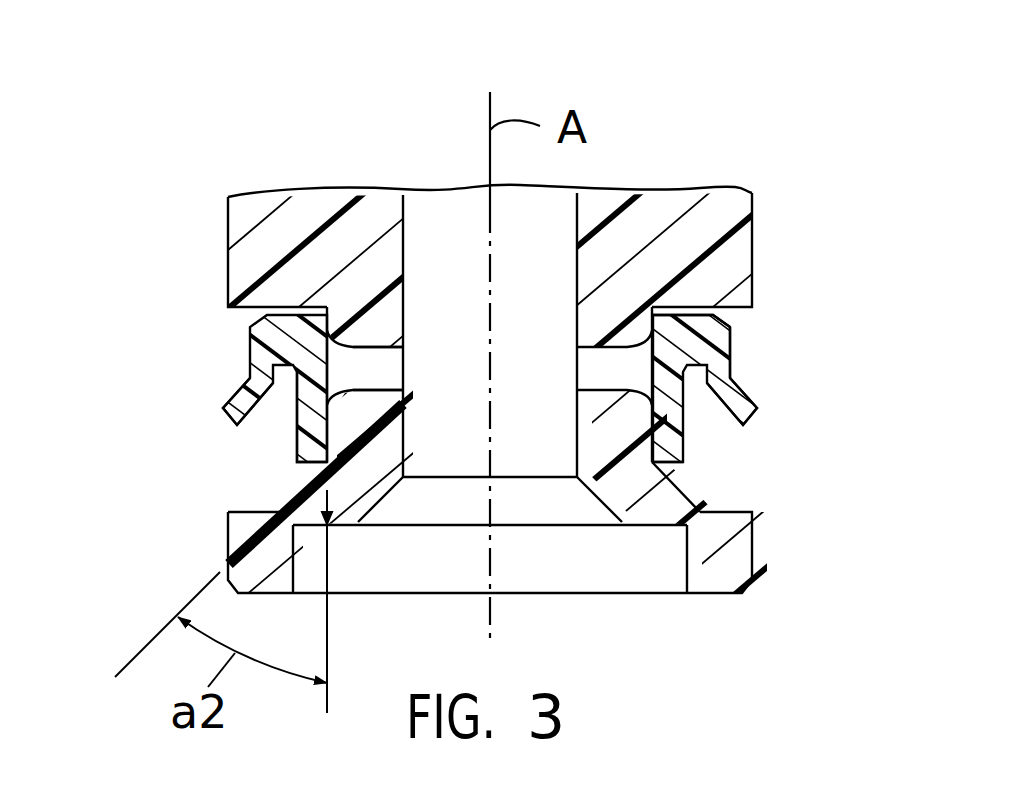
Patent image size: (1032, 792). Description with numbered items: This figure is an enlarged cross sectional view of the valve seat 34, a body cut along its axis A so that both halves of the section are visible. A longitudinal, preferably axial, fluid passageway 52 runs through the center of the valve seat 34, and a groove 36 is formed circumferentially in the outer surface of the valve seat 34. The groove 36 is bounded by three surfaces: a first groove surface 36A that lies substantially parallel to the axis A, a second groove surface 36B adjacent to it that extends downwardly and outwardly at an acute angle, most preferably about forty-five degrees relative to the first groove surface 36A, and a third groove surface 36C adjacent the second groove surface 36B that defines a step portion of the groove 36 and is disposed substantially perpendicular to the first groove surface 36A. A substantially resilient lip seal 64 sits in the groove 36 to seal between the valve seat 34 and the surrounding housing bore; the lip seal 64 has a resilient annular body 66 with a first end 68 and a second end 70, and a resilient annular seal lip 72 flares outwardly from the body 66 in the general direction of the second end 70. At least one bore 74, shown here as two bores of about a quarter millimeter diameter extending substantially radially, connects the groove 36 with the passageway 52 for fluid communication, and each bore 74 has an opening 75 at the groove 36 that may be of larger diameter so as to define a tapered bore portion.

The valve seat 34 is at (205, 215).
The groove 36 is at (235, 318).
The first groove surface 36A is at (297, 447).
The second groove surface 36B is at (290, 487).
The third groove surface 36C is at (247, 506).
The fluid passageway 52 is at (573, 215).
The lip seal 64 is at (752, 318).
The resilient annular body 66 is at (726, 350).
The first end 68 is at (688, 303).
The second end 70 is at (667, 463).
The seal lip 72 is at (757, 407).
The bore 74 is at (372, 348).
The opening 75 is at (332, 398).